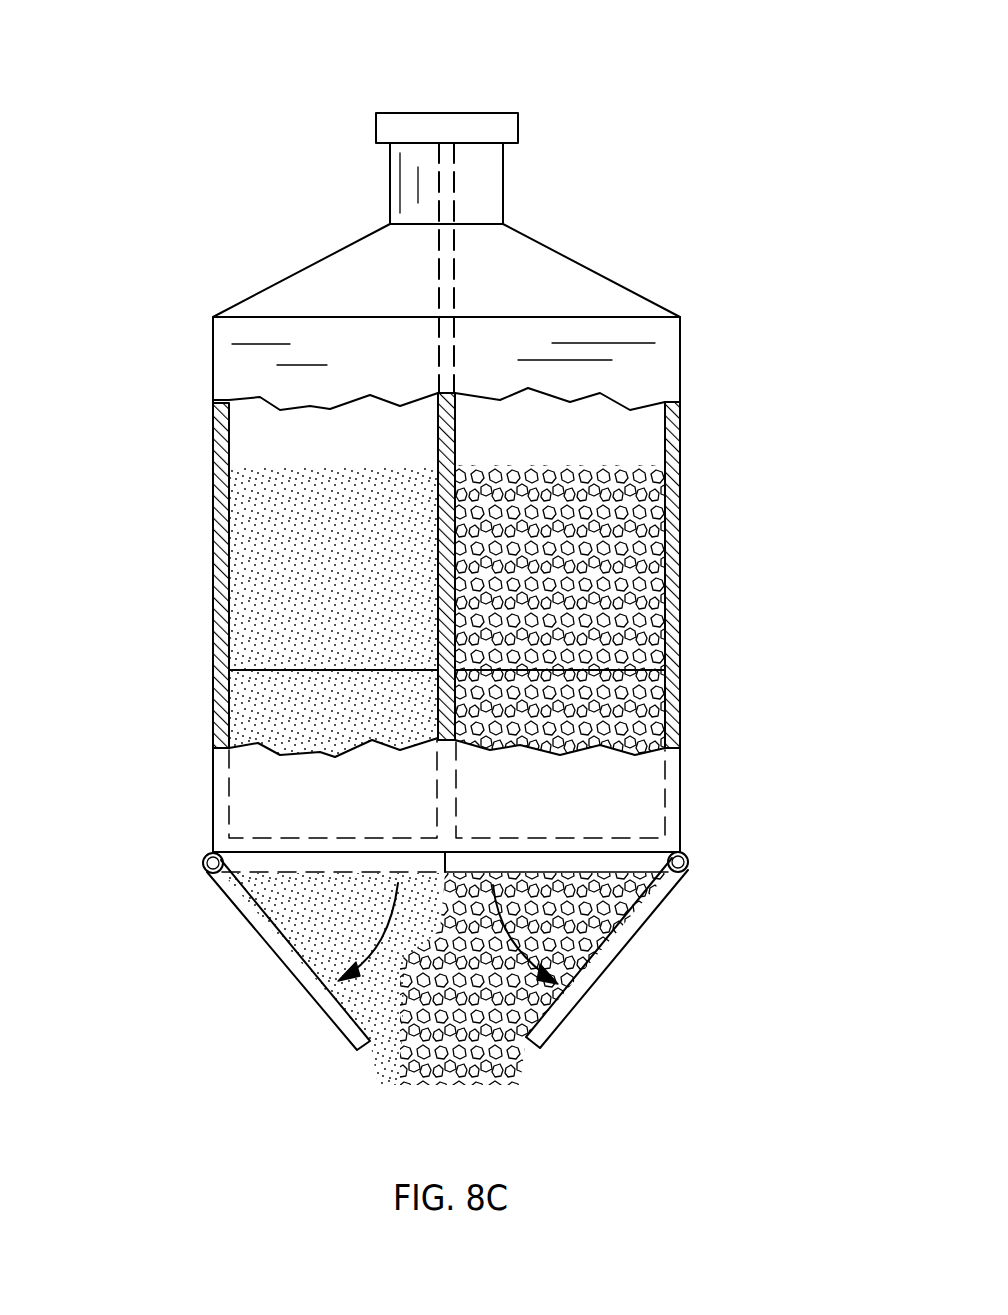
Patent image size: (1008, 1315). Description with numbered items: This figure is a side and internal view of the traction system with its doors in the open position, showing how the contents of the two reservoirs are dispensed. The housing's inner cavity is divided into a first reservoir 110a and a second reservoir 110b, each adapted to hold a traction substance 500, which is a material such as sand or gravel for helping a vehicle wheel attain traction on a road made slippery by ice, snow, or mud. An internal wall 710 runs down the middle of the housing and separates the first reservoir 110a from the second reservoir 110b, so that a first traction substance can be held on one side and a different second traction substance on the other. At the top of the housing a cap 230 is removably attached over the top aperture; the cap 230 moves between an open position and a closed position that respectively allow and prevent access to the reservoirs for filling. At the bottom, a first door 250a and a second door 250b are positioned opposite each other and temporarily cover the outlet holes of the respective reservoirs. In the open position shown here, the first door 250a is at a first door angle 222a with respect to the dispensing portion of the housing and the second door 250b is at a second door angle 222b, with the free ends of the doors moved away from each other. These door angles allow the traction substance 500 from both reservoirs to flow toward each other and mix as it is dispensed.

The cap 230 is at (438, 111).
The internal wall 710 is at (445, 267).
The first reservoir 110a is at (250, 428).
The second reservoir 110b is at (643, 435).
The traction substance 500 is at (262, 568).
The first door 250a is at (273, 938).
The second door 250b is at (593, 972).
The first door angle 222a is at (382, 938).
The second door angle 222b is at (497, 883).